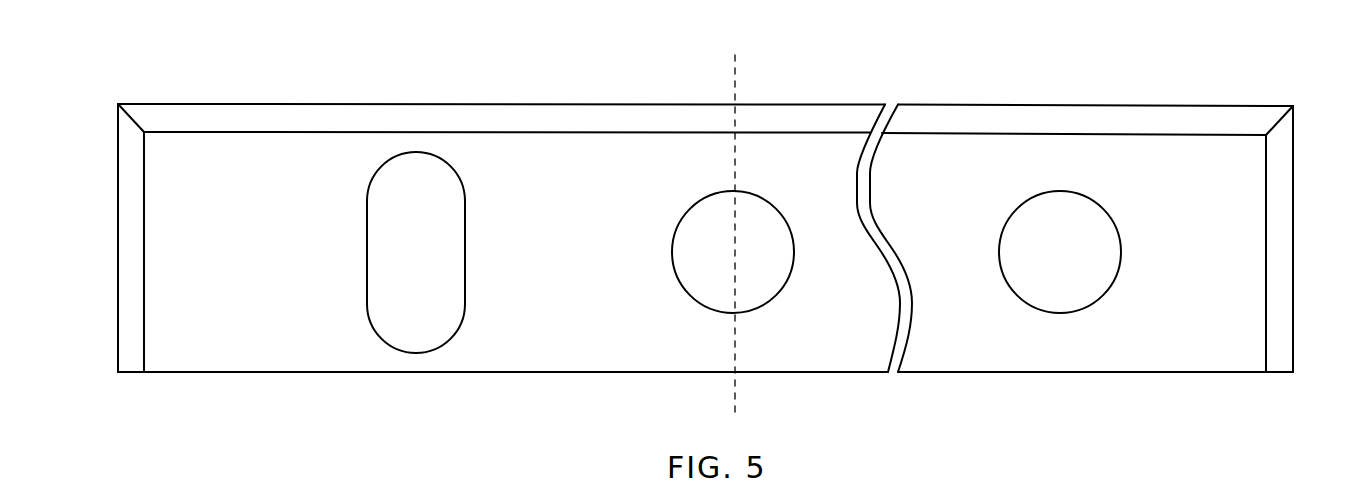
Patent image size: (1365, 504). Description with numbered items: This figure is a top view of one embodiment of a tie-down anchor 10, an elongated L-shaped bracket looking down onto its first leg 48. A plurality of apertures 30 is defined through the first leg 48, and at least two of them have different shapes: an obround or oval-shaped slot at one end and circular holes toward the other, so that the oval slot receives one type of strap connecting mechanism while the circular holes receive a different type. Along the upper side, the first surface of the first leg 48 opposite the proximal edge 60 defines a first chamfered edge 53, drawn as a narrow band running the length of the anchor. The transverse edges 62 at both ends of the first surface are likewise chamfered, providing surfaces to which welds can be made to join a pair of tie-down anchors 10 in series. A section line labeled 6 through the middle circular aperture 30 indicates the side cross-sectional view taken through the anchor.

The tie-down anchor 10 is at (455, 48).
The apertures 30 is at (457, 250).
The first leg 48 is at (183, 343).
The first chamfered edge 53 is at (1020, 122).
The proximal edge 60 is at (242, 373).
The transverse edges 62 is at (128, 282).
The section line 6- 6 is at (738, 72).